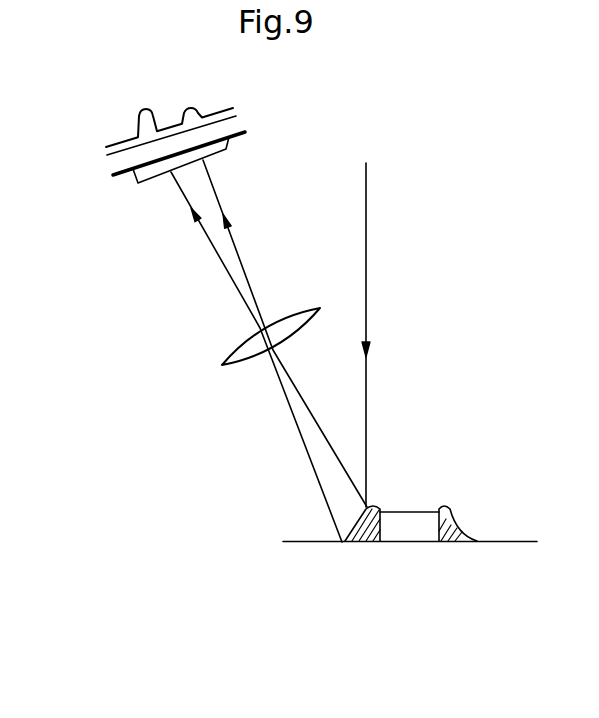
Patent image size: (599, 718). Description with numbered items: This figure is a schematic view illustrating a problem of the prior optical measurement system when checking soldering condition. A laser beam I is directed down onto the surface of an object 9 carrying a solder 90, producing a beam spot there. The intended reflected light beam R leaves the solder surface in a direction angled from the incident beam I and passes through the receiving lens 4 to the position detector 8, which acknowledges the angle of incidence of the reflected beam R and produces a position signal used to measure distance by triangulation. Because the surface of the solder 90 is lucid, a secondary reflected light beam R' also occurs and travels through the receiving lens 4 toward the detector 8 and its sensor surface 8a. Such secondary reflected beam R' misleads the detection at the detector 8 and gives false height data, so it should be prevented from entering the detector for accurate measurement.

The light receiving surface of photodetector 8a is at (138, 122).
The position detector 8 is at (140, 186).
The receiving lens 4 is at (226, 366).
The laser beam I is at (366, 298).
The reflected light beam R is at (285, 333).
The secondary reflected light beam R' is at (256, 357).
The object 9 is at (417, 530).
The solder 90 is at (453, 518).